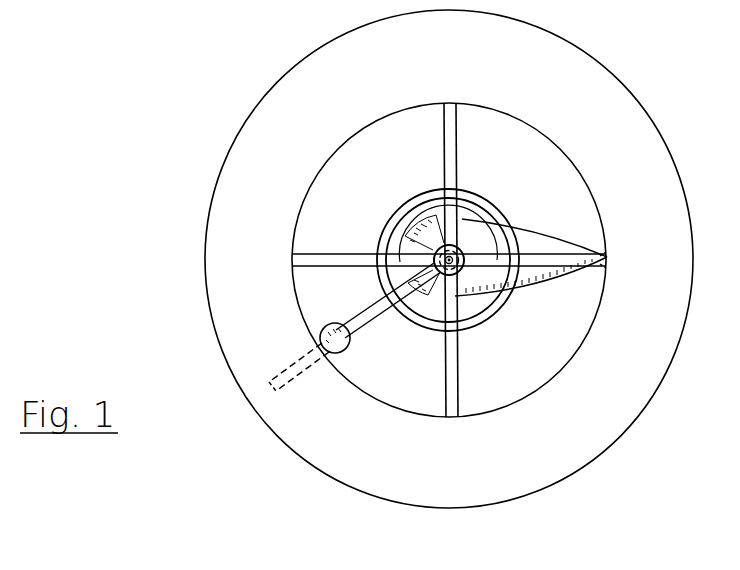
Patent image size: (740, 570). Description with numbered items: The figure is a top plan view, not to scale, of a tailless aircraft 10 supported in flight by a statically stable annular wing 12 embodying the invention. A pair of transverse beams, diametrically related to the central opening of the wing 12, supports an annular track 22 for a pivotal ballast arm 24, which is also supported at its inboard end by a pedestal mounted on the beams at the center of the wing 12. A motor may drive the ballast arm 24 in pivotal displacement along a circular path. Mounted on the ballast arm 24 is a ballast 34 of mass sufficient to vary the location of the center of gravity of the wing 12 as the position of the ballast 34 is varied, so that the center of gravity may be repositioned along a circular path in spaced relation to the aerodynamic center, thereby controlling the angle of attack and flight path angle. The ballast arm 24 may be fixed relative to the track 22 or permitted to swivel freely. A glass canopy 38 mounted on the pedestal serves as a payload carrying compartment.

The aircraft 10 is at (268, 71).
The wing 12 is at (232, 166).
The annular track 22 is at (486, 201).
The ballast arm 24 is at (283, 372).
The ballast 34 is at (352, 346).
The glass canopy 38 is at (533, 284).